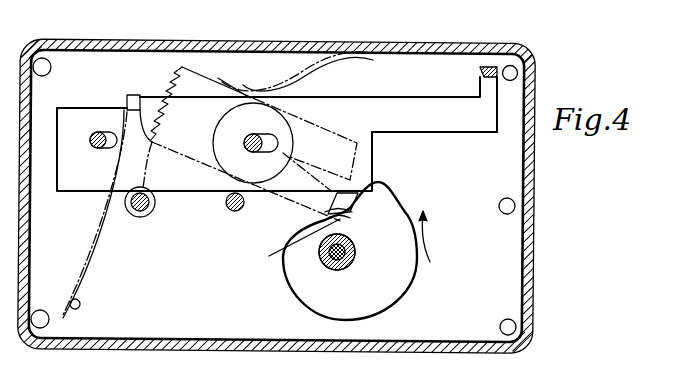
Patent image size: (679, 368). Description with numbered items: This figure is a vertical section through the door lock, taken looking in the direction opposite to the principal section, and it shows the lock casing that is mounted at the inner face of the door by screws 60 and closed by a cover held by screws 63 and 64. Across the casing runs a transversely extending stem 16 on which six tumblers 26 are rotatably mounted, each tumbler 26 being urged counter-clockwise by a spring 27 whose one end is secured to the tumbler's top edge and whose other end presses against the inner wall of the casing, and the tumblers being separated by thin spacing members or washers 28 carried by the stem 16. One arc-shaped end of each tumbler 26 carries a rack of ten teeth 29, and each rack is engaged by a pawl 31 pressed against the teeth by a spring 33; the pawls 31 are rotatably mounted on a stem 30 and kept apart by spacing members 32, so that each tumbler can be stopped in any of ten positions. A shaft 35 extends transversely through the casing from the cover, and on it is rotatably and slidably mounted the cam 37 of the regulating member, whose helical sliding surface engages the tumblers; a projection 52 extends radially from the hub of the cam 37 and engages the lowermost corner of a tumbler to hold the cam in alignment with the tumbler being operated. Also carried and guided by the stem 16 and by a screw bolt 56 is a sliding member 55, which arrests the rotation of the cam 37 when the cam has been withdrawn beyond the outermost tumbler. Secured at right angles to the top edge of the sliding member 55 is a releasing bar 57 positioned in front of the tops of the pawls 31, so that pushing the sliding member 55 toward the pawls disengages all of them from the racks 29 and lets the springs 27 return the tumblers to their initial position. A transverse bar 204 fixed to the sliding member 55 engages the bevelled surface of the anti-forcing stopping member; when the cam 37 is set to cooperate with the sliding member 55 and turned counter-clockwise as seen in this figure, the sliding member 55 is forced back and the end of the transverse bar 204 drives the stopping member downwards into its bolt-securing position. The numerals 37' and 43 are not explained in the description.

The stem 16 is at (245, 140).
The tumbler 26 is at (358, 152).
The spring 27 is at (310, 68).
The spacing member 28 is at (247, 100).
The teeth 29 is at (174, 78).
The stem 30 is at (157, 204).
The pawl 31 is at (145, 171).
The spacing member 32 is at (141, 210).
The spring 33 is at (75, 282).
The shaft 35 is at (327, 258).
The cam 37 is at (366, 251).
The cam follower 37' is at (369, 192).
The shaft 43 is at (356, 252).
The projection 52 is at (293, 245).
The sliding member 55 is at (330, 107).
The screw bolt 56 is at (93, 134).
The bar 57 is at (138, 96).
The screws 60 is at (518, 73).
The screw 63 is at (502, 213).
The screw 64 is at (234, 212).
The transverse bar 204 is at (498, 68).